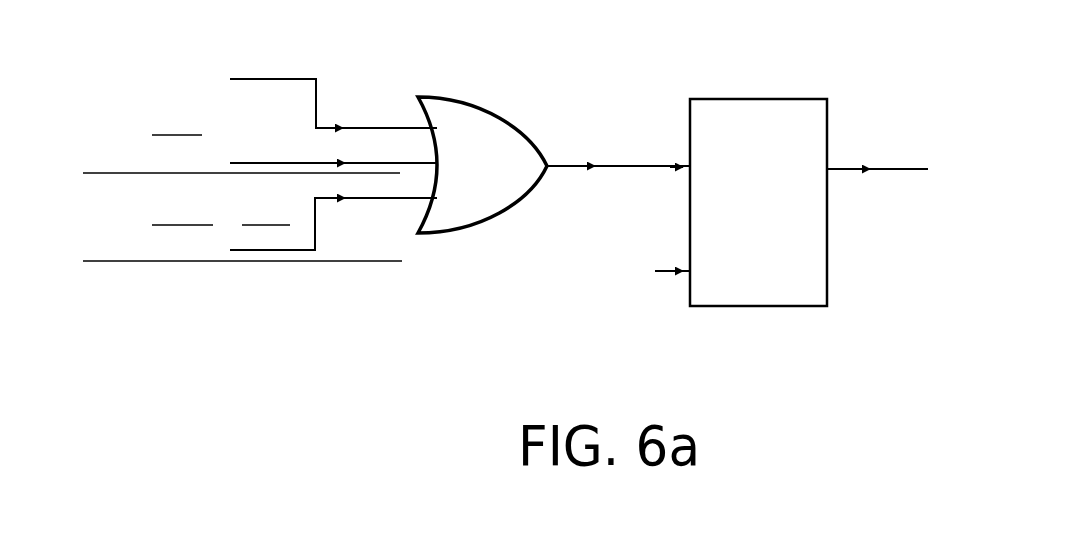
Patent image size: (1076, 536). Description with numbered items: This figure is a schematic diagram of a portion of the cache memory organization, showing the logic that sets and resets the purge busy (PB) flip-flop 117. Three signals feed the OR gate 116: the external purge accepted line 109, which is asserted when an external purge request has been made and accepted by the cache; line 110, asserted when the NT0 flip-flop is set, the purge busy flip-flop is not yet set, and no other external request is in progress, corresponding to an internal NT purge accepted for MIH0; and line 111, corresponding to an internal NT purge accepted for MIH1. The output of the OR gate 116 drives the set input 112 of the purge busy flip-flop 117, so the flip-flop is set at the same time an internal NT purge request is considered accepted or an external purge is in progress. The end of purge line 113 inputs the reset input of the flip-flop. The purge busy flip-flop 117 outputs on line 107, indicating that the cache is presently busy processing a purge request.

The output line 107 is at (893, 169).
The external purge accepted line 109 is at (318, 88).
The NT0 FF and not purge busy FF and no external purge in process line 110 is at (373, 158).
The NT1 FF and not NT0 FF and not purge busy FF and no external purge request in pro 111 is at (382, 203).
The set input 112 is at (610, 160).
The end of purge line 113 is at (665, 277).
The OR gate 116 is at (472, 97).
The purge busy flip-flop 117 is at (828, 115).